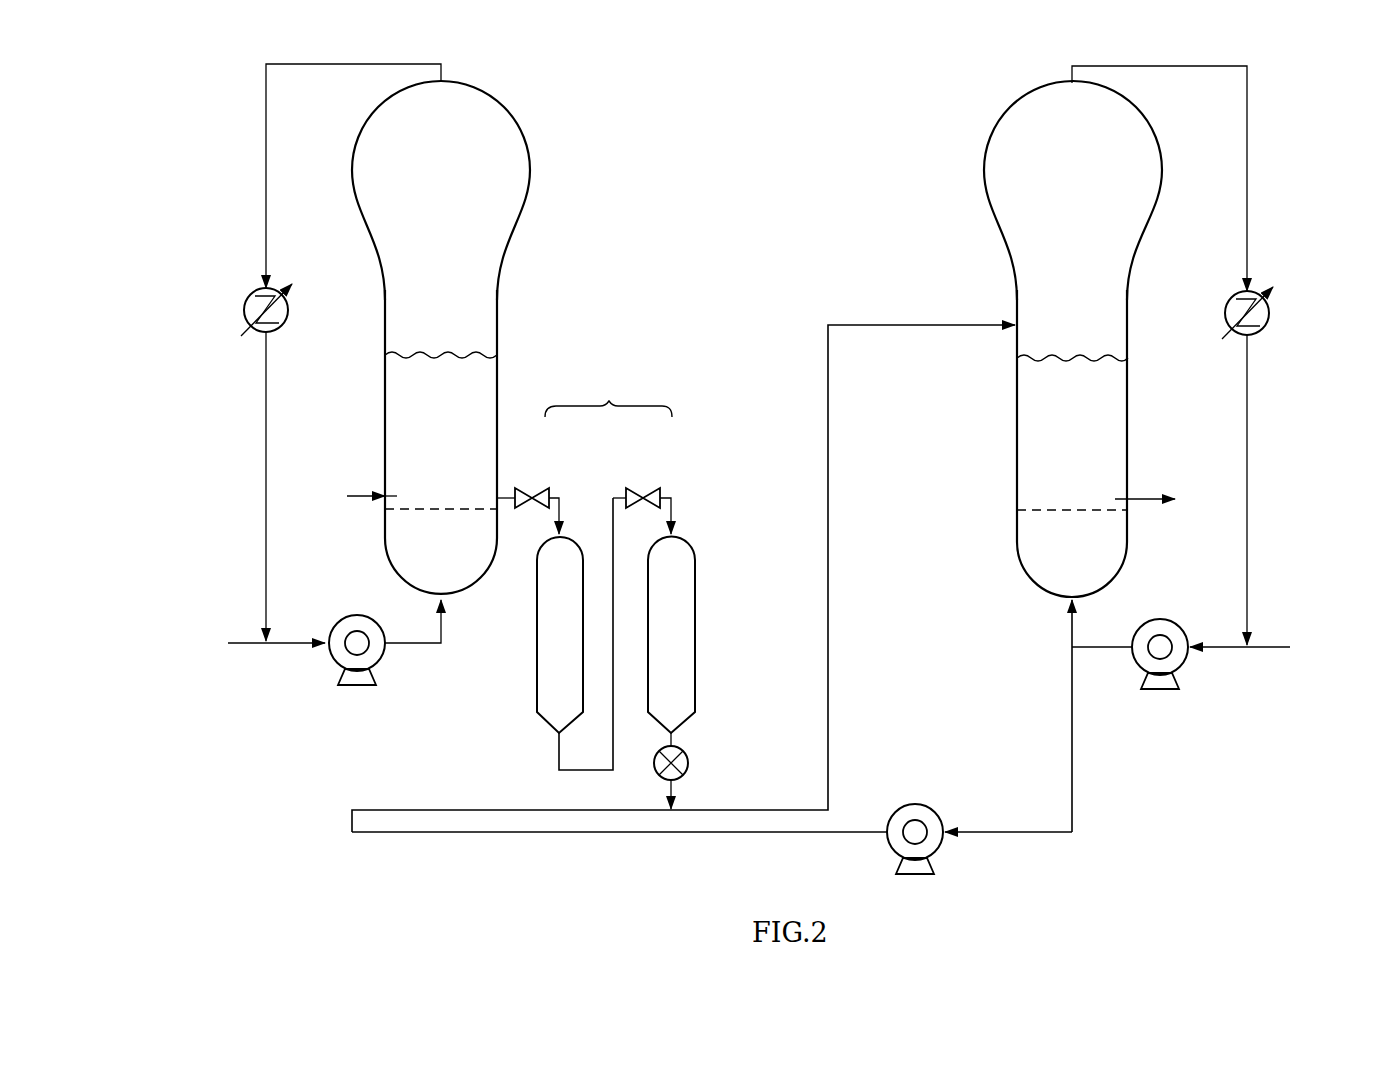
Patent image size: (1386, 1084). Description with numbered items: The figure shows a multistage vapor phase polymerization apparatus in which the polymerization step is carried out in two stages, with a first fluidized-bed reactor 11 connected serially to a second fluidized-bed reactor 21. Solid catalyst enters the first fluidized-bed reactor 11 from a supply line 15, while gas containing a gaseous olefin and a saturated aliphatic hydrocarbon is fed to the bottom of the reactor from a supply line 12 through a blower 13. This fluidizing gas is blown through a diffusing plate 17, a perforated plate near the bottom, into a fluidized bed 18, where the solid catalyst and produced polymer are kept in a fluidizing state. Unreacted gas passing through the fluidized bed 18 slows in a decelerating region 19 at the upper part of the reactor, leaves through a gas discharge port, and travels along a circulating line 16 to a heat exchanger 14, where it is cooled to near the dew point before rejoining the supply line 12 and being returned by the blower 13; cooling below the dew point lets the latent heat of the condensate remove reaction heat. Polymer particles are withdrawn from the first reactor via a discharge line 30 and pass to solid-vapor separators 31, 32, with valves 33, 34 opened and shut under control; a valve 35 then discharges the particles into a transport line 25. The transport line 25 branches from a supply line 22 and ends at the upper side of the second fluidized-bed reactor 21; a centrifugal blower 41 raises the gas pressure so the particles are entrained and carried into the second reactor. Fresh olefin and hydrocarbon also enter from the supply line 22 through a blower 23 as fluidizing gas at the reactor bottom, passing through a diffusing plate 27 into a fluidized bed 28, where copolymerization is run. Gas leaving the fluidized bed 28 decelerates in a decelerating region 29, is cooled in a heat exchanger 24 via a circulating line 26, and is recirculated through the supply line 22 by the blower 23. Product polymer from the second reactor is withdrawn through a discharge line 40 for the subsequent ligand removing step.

The first fluidized-bed reactor 11 is at (533, 104).
The supply line 12 is at (288, 646).
The blower 13 is at (358, 688).
The heat exchanger (cooling unit) 14 is at (244, 308).
The supply line 15 is at (352, 496).
The circulating line 16 is at (266, 432).
The diffusing plate 17 is at (410, 512).
The fluidized bed 18 is at (478, 389).
The decelerating region 19 is at (473, 146).
The second fluidized-bed reactor 21 is at (980, 112).
The supply line 22 is at (1232, 649).
The blower 23 is at (1159, 690).
The heat exchanger (cooling unit) 24 is at (1270, 316).
The transport line 25 is at (828, 545).
The circulating line 26 is at (1247, 470).
The diffusing plate 27 is at (1042, 510).
The fluidized bed 28 is at (1036, 399).
The decelerating region 29 is at (1008, 202).
The discharge line 30 is at (608, 395).
The solid-vapor separator 31 is at (537, 676).
The solid-vapor separator 32 is at (695, 665).
The valve 33 is at (537, 495).
The valve 34 is at (655, 496).
The valve 35 is at (688, 758).
The discharge line 40 is at (1140, 500).
The centrifugal blower 41 is at (918, 806).